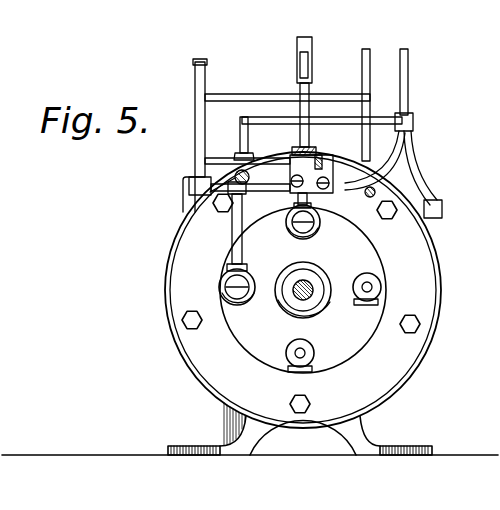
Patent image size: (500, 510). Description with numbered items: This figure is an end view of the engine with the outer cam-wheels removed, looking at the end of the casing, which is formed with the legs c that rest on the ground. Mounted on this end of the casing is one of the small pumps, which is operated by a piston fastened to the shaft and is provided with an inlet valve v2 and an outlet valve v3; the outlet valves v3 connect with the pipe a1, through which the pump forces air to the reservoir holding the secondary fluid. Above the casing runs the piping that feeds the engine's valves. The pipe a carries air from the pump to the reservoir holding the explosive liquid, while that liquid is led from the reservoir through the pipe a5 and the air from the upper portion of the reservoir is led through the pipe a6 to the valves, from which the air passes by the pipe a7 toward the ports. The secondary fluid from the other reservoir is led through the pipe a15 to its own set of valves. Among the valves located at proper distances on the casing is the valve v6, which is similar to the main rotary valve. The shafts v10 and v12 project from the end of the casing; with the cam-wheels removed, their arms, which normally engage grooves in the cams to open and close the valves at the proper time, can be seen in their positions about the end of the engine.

The pipe a is at (299, 45).
The pipe a1 is at (196, 88).
The pipe a5 is at (408, 88).
The pipe a6 is at (232, 94).
The pipe a7 is at (165, 300).
The pipe a15 is at (311, 57).
The inlet valve v2 is at (381, 287).
The outlet valve v3 is at (248, 278).
The valve v6 is at (196, 198).
The shaft v10 is at (320, 147).
The shaft v12 is at (374, 189).
The legs c is at (347, 425).